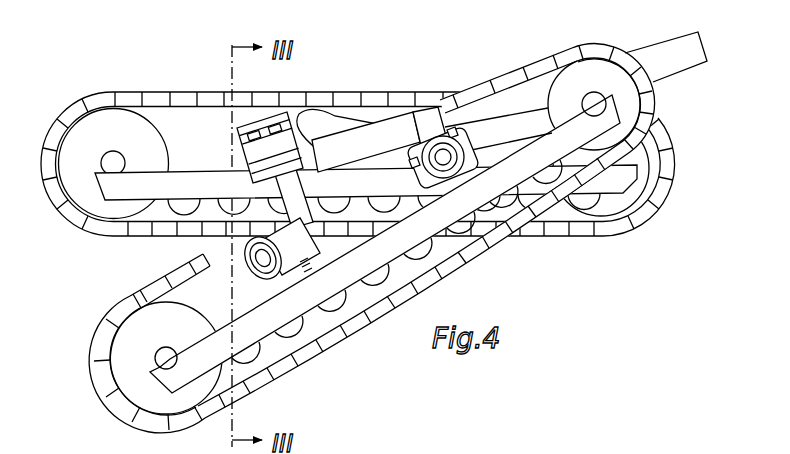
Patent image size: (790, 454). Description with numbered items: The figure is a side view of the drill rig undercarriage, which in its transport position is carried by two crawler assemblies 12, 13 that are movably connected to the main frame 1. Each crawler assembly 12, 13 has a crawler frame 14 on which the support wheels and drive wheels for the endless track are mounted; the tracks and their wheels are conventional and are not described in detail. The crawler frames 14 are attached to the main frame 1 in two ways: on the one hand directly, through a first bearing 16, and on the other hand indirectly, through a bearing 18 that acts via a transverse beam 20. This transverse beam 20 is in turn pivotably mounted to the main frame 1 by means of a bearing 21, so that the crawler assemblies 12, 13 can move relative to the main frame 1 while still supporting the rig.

The main frame 1 is at (370, 154).
The crawler assembly 12 is at (130, 295).
The crawler assembly 13 is at (160, 88).
The crawler frame 14 is at (210, 201).
The first bearing 16 is at (466, 153).
The bearing 18 is at (257, 272).
The transverse beam 20 is at (300, 194).
The bearing 21 is at (236, 142).